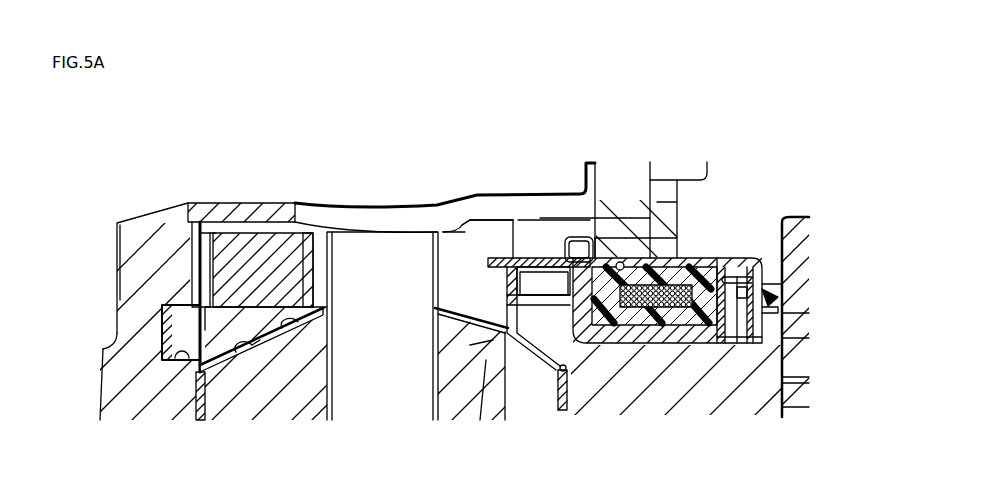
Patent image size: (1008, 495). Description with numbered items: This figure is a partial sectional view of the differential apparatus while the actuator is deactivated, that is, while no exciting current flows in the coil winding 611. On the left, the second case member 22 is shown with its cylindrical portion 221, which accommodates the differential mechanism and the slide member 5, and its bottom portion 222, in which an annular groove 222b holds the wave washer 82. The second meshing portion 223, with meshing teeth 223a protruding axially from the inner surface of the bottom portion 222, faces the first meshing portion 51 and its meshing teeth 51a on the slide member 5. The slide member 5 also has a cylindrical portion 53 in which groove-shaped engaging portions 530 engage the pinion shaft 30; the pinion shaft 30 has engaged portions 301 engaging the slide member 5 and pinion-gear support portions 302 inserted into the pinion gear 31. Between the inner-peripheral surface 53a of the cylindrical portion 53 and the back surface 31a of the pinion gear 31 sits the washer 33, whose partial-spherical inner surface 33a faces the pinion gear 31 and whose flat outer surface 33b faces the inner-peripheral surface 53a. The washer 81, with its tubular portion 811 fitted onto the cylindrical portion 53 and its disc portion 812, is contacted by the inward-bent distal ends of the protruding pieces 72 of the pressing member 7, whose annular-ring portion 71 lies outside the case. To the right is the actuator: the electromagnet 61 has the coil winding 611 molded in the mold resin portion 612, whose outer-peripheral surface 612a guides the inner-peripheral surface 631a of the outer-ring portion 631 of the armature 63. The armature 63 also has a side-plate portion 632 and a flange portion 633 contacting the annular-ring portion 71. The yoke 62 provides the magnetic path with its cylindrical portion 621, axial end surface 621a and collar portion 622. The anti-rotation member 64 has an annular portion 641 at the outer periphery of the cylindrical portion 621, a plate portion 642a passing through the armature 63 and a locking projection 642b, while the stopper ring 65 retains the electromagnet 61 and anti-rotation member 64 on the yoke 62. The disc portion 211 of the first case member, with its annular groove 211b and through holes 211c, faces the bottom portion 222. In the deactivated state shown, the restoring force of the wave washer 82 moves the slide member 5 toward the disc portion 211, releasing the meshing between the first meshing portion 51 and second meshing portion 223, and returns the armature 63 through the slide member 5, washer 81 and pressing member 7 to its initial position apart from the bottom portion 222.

The second case member 22 is at (123, 192).
The cylindrical portion 221 is at (421, 208).
The bottom portion 222 is at (131, 275).
The annular groove 222b is at (180, 357).
The second meshing portion 223 is at (183, 217).
The meshing teeth 223a is at (192, 243).
The slide member 5 is at (216, 233).
The first meshing portion 51 is at (205, 226).
The meshing teeth 51a is at (207, 260).
The cylindrical portion 53 is at (264, 240).
The engaging portions 530 is at (314, 229).
The inner-peripheral surface 53a is at (493, 342).
The pinion shaft 30 is at (376, 225).
The engaged portions 301 is at (364, 272).
The pinion-gear support portions 302 is at (364, 399).
The pinion gear 31 is at (453, 375).
The back surface 31a is at (450, 337).
The washer 33 is at (247, 342).
The inner surface 33a is at (244, 360).
The outer surface 33b is at (290, 352).
The wave washer 82 is at (178, 320).
The washer 81 is at (510, 118).
The tubular portion 811 is at (481, 226).
The disc portion 812 is at (503, 238).
The pressing member 7 is at (563, 283).
The annular-ring portion 71 is at (590, 190).
The protruding pieces 72 is at (540, 258).
The electromagnet 61 is at (605, 446).
The coil winding 611 is at (650, 345).
The mold resin portion 612 is at (680, 345).
The outer-peripheral surface 612a is at (658, 266).
The yoke 62 is at (763, 385).
The cylindrical portion 621 is at (731, 345).
The axial end surface 621a is at (762, 337).
The collar portion 622 is at (563, 380).
The armature 63 is at (720, 258).
The outer-ring portion 631 is at (685, 258).
The inner-peripheral surface 631a is at (624, 262).
The side-plate portion 632 is at (762, 265).
The flange portion 633 is at (606, 252).
The anti-rotation member 64 is at (756, 258).
The annular portion 641 is at (729, 345).
The plate portion 642a is at (774, 297).
The locking projection 642b is at (778, 298).
The stopper ring 65 is at (763, 313).
The disc portion 211 is at (757, 385).
The annular groove 211b is at (668, 243).
The through holes 211c is at (541, 352).